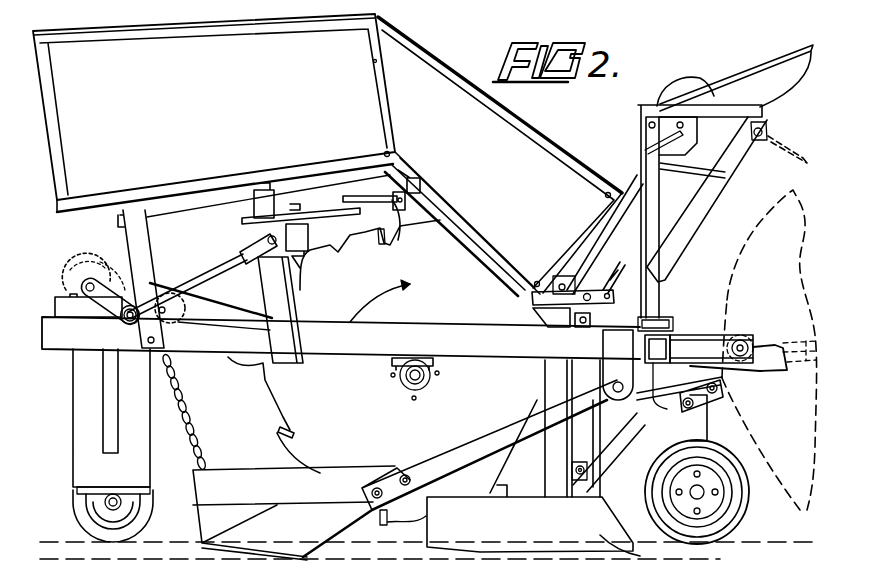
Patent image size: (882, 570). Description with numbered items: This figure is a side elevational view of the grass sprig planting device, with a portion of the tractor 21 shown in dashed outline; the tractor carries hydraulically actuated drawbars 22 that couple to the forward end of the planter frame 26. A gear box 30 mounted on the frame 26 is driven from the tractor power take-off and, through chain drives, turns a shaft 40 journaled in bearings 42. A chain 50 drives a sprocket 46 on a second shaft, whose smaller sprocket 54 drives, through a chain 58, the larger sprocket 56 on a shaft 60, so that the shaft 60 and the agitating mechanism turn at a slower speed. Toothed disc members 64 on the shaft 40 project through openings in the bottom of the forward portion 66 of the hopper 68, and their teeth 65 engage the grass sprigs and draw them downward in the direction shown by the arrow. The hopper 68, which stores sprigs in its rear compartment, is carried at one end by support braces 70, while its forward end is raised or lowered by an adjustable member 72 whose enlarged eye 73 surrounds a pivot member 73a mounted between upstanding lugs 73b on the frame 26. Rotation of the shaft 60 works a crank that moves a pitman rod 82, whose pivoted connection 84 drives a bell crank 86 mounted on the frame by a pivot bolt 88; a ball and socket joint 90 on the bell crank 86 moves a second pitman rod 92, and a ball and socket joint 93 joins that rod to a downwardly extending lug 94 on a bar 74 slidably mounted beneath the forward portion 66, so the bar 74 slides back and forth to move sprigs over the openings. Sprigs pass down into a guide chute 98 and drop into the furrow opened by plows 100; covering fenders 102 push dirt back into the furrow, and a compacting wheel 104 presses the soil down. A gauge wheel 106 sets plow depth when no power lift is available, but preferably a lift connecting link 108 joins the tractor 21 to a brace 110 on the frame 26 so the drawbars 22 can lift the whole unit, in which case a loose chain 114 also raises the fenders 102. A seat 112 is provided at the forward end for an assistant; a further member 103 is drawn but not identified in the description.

The tractor 21 is at (733, 262).
The drawbars 22 is at (757, 347).
The frame 26 is at (55, 350).
The gear box 30 is at (643, 415).
The shaft 40 is at (432, 377).
The bearings 42 is at (405, 379).
The sprocket 46 is at (185, 312).
The endless transmission chain 50 is at (224, 300).
The sprocket 54 is at (160, 318).
The sprocket 56 is at (78, 271).
The endless transmission chain 58 is at (118, 278).
The shaft 60 is at (82, 264).
The toothed disc members 64 is at (431, 311).
The teeth 65 is at (282, 432).
The forward portion 66 is at (535, 160).
The hopper 68 is at (169, 89).
The support braces 70 is at (140, 243).
The adjustable member 72 is at (610, 273).
The enlarged eye 73 is at (592, 302).
The pivot member 73a is at (585, 328).
The upstanding lugs 73b is at (573, 328).
The bar 74 is at (422, 178).
The pitman rod 82 is at (200, 278).
The pivoted connection 84 is at (245, 250).
The bell crank 86 is at (320, 196).
The pivot bolt 88 is at (295, 205).
The ball and socket joint 90 is at (330, 195).
The pitman rod 92 is at (310, 242).
The ball and socket joint 93 is at (400, 178).
The downwardly extending lug 94 is at (402, 230).
The guide chute 98 is at (535, 487).
The plows 100 is at (622, 540).
The covering fenders 102 is at (300, 556).
The blade strut 103 is at (465, 445).
The compacting wheel 104 is at (78, 514).
The gauge wheel 106 is at (746, 511).
The lift connecting link 108 is at (785, 145).
The brace 110 is at (743, 158).
The seat 112 is at (755, 83).
The chain 114 is at (195, 388).